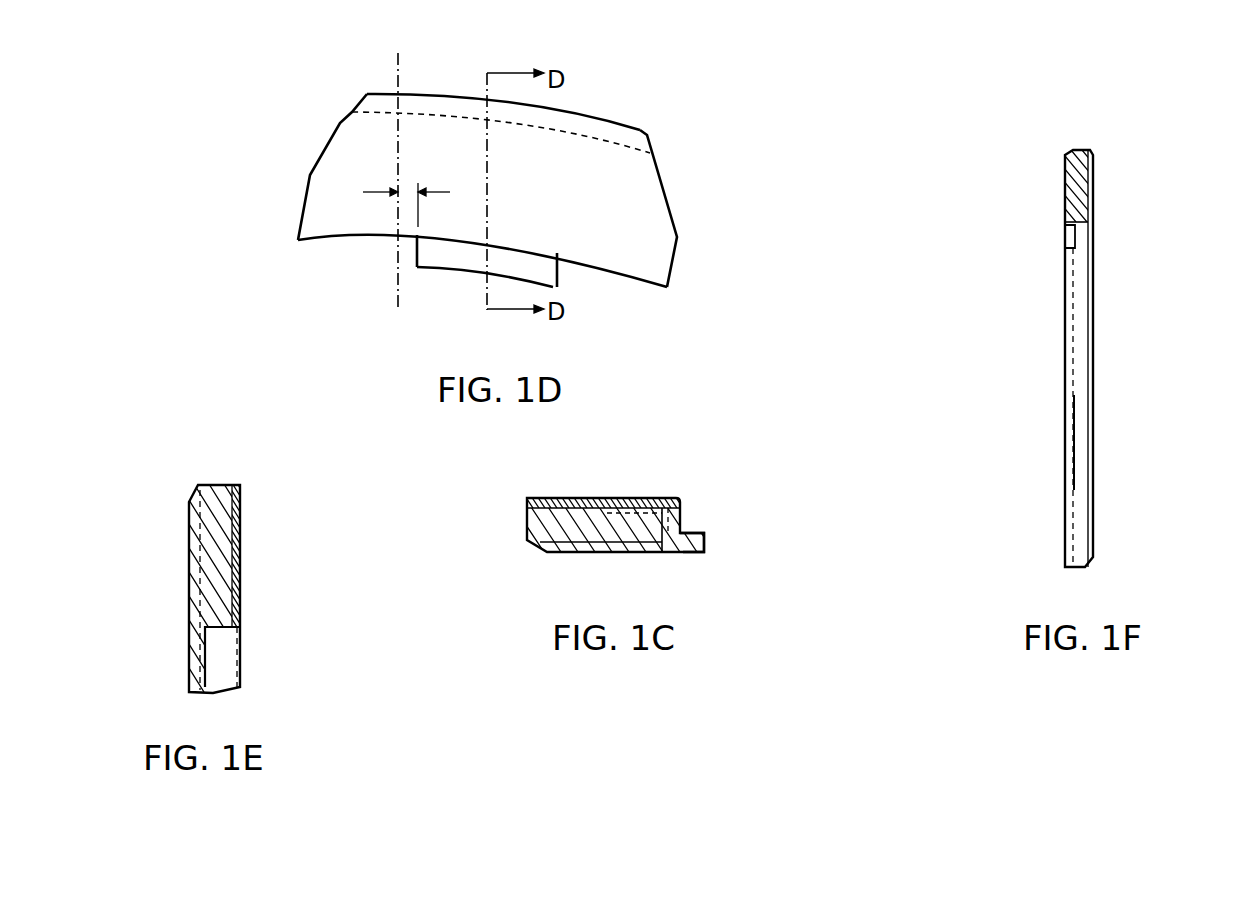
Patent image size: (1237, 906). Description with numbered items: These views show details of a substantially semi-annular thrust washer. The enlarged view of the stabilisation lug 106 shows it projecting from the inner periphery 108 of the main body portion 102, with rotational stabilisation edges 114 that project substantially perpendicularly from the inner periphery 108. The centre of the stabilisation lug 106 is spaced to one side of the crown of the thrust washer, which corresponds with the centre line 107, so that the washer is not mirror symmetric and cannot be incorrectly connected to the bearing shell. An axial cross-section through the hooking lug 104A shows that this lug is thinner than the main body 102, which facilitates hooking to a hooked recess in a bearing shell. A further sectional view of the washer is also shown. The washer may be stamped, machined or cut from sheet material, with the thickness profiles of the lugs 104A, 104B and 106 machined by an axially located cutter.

In FIG. 1D, the main body portion 102 is at (557, 240).
In FIG. 1E, the main body portion 102 is at (203, 537).
In FIG. 1C, the main body portion 102 is at (542, 522).
In FIG. 1F, the main body portion 102 is at (1078, 185).
In FIG. 1C, the hooking lug 104A is at (690, 553).
In FIG. 1F, the hooking lug 104B is at (1065, 417).
In FIG. 1D, the stabilisation lug 106 is at (453, 260).
In FIG. 1E, the stabilisation lug 106 is at (200, 643).
In FIG. 1F, the stabilisation lug 106 is at (1067, 237).
In FIG. 1D, the centre line 107 is at (397, 67).
In FIG. 1D, the inner periphery 108 is at (313, 242).
In FIG. 1D, the rotational stabilisation edges 114 is at (417, 250).